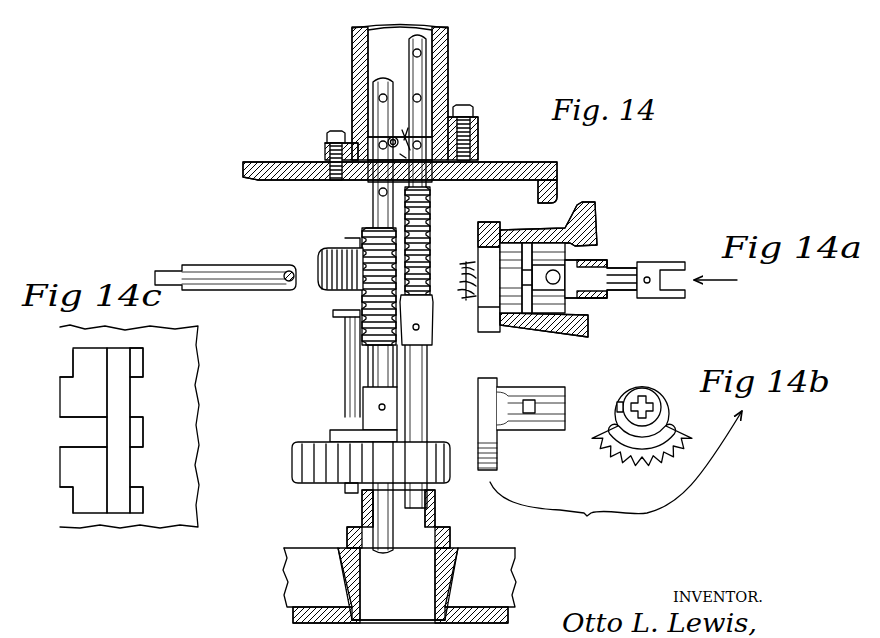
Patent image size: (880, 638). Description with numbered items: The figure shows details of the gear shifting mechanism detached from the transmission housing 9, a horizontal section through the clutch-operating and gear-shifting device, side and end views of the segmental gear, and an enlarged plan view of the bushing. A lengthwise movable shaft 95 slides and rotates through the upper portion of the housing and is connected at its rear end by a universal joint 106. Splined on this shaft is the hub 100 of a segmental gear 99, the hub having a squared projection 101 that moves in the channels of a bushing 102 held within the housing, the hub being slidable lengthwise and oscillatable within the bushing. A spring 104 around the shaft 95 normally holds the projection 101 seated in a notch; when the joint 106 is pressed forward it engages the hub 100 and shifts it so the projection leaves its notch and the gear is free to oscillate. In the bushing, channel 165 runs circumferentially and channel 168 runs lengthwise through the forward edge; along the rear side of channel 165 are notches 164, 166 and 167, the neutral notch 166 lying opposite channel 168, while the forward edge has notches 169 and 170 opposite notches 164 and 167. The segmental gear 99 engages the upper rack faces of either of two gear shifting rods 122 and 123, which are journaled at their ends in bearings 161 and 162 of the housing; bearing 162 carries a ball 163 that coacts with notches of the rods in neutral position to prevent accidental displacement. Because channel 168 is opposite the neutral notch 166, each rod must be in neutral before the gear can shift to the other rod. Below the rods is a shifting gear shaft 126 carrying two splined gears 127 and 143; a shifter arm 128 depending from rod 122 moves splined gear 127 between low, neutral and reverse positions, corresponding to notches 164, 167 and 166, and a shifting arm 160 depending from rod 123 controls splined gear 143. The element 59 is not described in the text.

In FIG. 14, the transmission housing 9 is at (541, 162).
In FIG. 14A, the transmission housing 9 is at (598, 204).
In FIG. 14, the base housing 59 is at (508, 582).
In FIG. 14, the lengthwise movable shaft 95 is at (222, 264).
In FIG. 14A, the lengthwise movable shaft 95 is at (624, 293).
In FIG. 14A, the segmental gear 99 is at (492, 222).
In FIG. 14B, the segmental gear 99 is at (499, 468).
In FIG. 14A, the hub 100 is at (601, 301).
In FIG. 14B, the hub 100 is at (552, 431).
In FIG. 14B, the squared projection 101 is at (530, 399).
In FIG. 14A, the bushing 102 is at (572, 252).
In FIG. 14C, the bushing 102 is at (180, 388).
In FIG. 14A, the spring 104 is at (463, 292).
In FIG. 14A, the universal joint 106 is at (654, 260).
In FIG. 14, the gear shifting rod 122 is at (427, 361).
In FIG. 14, the gear shifting rod 123 is at (373, 206).
In FIG. 14, the shifting gear shaft 126 is at (345, 368).
In FIG. 14, the splined gear 127 is at (320, 291).
In FIG. 14, the shifter arm 128 is at (433, 332).
In FIG. 14, the splined gear 143 is at (292, 461).
In FIG. 14, the shifting arm 160 is at (330, 437).
In FIG. 14, the bearing 161 is at (436, 507).
In FIG. 14, the bearing 162 is at (448, 68).
In FIG. 14, the ball 163 is at (388, 139).
In FIG. 14C, the notch 164 is at (146, 503).
In FIG. 14C, the channel 165 is at (118, 476).
In FIG. 14C, the neutral notch 166 is at (143, 433).
In FIG. 14C, the notch 167 is at (143, 358).
In FIG. 14C, the channel 168 is at (84, 431).
In FIG. 14C, the notch 169 is at (68, 500).
In FIG. 14C, the notch 170 is at (73, 358).